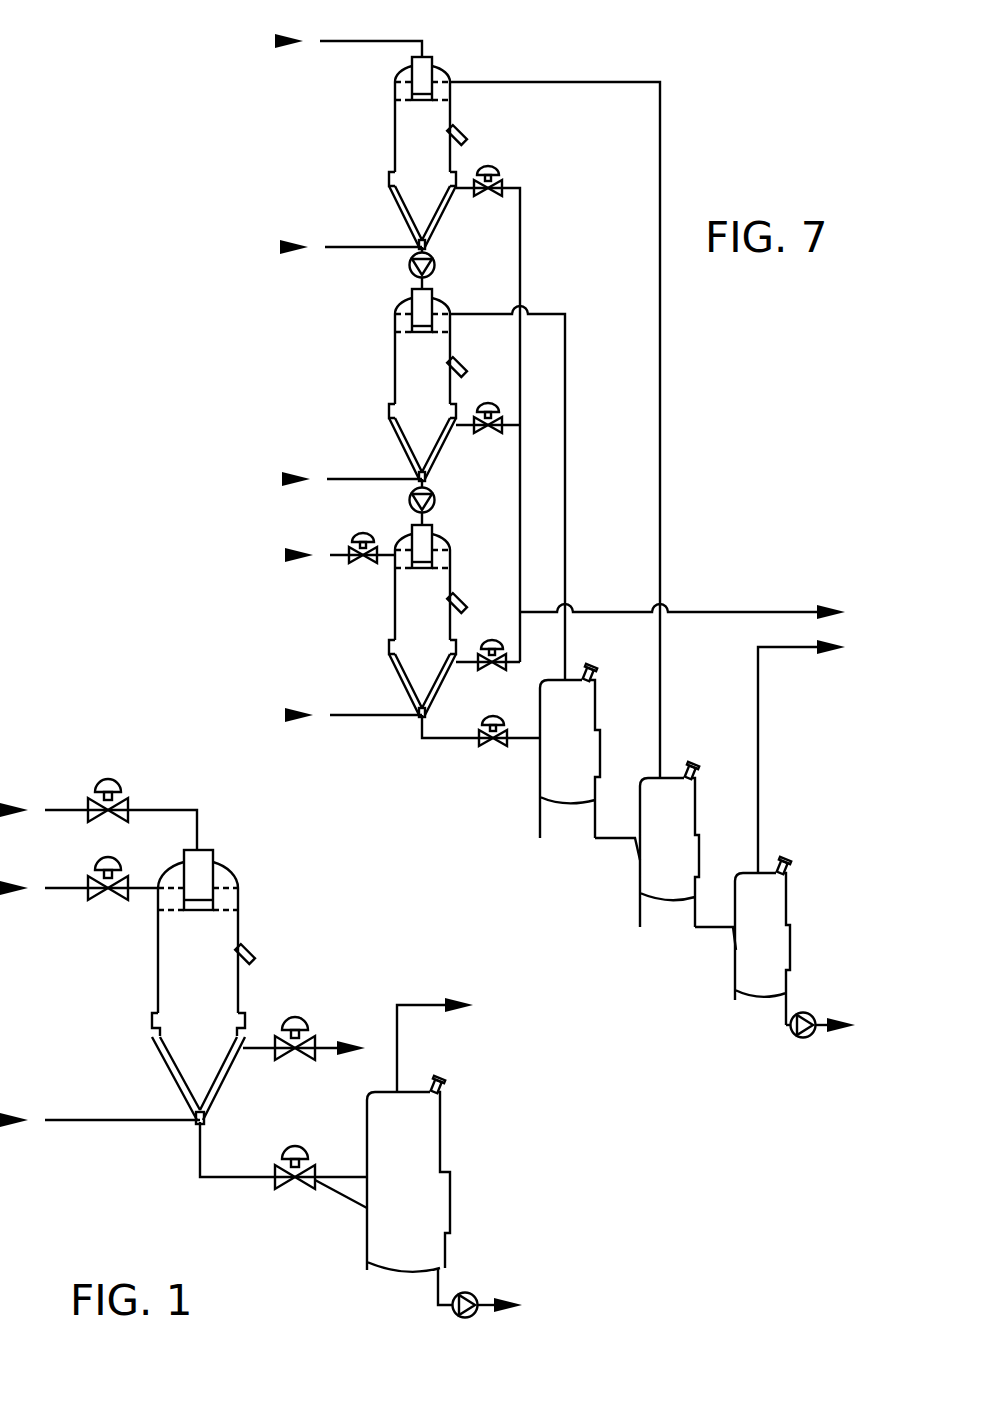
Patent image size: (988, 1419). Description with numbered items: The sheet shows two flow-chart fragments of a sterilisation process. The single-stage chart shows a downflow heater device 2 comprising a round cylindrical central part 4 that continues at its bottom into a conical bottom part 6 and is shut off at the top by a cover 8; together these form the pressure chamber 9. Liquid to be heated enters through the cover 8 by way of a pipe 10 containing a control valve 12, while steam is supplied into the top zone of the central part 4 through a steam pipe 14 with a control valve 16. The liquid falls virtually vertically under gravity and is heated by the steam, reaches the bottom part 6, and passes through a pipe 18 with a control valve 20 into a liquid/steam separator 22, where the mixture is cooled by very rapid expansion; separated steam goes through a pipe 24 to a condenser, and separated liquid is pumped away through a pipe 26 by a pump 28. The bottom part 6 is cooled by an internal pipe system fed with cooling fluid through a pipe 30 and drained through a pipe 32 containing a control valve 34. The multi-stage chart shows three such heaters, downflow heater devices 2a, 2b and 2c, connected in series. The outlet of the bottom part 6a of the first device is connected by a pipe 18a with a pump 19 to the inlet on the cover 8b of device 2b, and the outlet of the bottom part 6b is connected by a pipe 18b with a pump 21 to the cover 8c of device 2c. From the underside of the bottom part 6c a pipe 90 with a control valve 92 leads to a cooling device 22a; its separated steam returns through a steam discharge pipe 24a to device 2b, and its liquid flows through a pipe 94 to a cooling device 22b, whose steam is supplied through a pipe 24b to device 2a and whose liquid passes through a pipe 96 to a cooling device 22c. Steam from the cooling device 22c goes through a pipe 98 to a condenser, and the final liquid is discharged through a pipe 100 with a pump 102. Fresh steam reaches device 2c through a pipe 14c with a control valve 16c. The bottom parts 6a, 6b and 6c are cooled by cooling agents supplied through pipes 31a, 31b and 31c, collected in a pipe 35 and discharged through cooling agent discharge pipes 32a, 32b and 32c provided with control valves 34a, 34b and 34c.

In FIG. 1, the downflow heater device 2 is at (258, 930).
In FIG. 1, the central part 4 is at (157, 960).
In FIG. 1, the conical bottom part 6 is at (170, 1070).
In FIG. 1, the cover 8 is at (230, 878).
In FIG. 1, the pressure chamber 9 is at (182, 995).
In FIG. 7, the pipe 10 is at (365, 41).
In FIG. 1, the pipe 10 is at (165, 810).
In FIG. 1, the control valve 12 is at (85, 805).
In FIG. 1, the steam pipe 14 is at (137, 886).
In FIG. 1, the control valve 16 is at (95, 898).
In FIG. 1, the pipe 18 is at (238, 1180).
In FIG. 1, the control valve 20 is at (303, 1190).
In FIG. 1, the liquid/steam separator 22 is at (462, 1152).
In FIG. 1, the pipe 24 is at (397, 1062).
In FIG. 1, the pipe 26 is at (440, 1282).
In FIG. 1, the pump 28 is at (462, 1318).
In FIG. 1, the pipe 30 is at (138, 1122).
In FIG. 1, the pipe 32 is at (253, 1055).
In FIG. 1, the control valve 34 is at (322, 1028).
In FIG. 7, the downflow heater device 2a is at (348, 113).
In FIG. 7, the downflow heater device 2b is at (365, 356).
In FIG. 7, the downflow heater device 2c is at (372, 632).
In FIG. 7, the bottom part 6a is at (395, 210).
In FIG. 7, the bottom part 6b is at (400, 443).
In FIG. 7, the bottom part 6c is at (405, 688).
In FIG. 7, the cover 8b is at (445, 298).
In FIG. 7, the cover 8c is at (445, 540).
In FIG. 7, the pipe 14c is at (340, 558).
In FIG. 7, the control valve 16c is at (372, 560).
In FIG. 7, the pipe 18a is at (425, 246).
In FIG. 7, the pipe 18b is at (425, 481).
In FIG. 7, the pump 19 is at (409, 263).
In FIG. 7, the pump 21 is at (409, 500).
In FIG. 7, the cooling device 22a is at (563, 763).
In FIG. 7, the cooling device 22b is at (705, 800).
In FIG. 7, the cooling device 22c is at (760, 953).
In FIG. 7, the steam discharge pipe 24a is at (566, 570).
In FIG. 7, the pipe 24b is at (661, 517).
In FIG. 7, the pipe 31a is at (347, 243).
In FIG. 7, the pipe 31b is at (368, 477).
In FIG. 7, the pipe 31c is at (366, 716).
In FIG. 7, the cooling agent discharge pipe 32a is at (500, 188).
In FIG. 7, the cooling agent discharge pipe 32b is at (522, 412).
In FIG. 7, the cooling agent discharge pipe 32c is at (520, 627).
In FIG. 7, the control valve 34a is at (497, 178).
In FIG. 7, the control valve 34b is at (500, 416).
In FIG. 7, the control valve 34c is at (510, 668).
In FIG. 7, the pipe 35 is at (795, 611).
In FIG. 7, the pipe 90 is at (455, 740).
In FIG. 7, the control valve 92 is at (492, 752).
In FIG. 7, the pipe 94 is at (593, 825).
In FIG. 7, the pipe 96 is at (695, 915).
In FIG. 7, the pipe 98 is at (760, 803).
In FIG. 7, the pipe 100 is at (778, 1010).
In FIG. 7, the pump 102 is at (805, 1040).